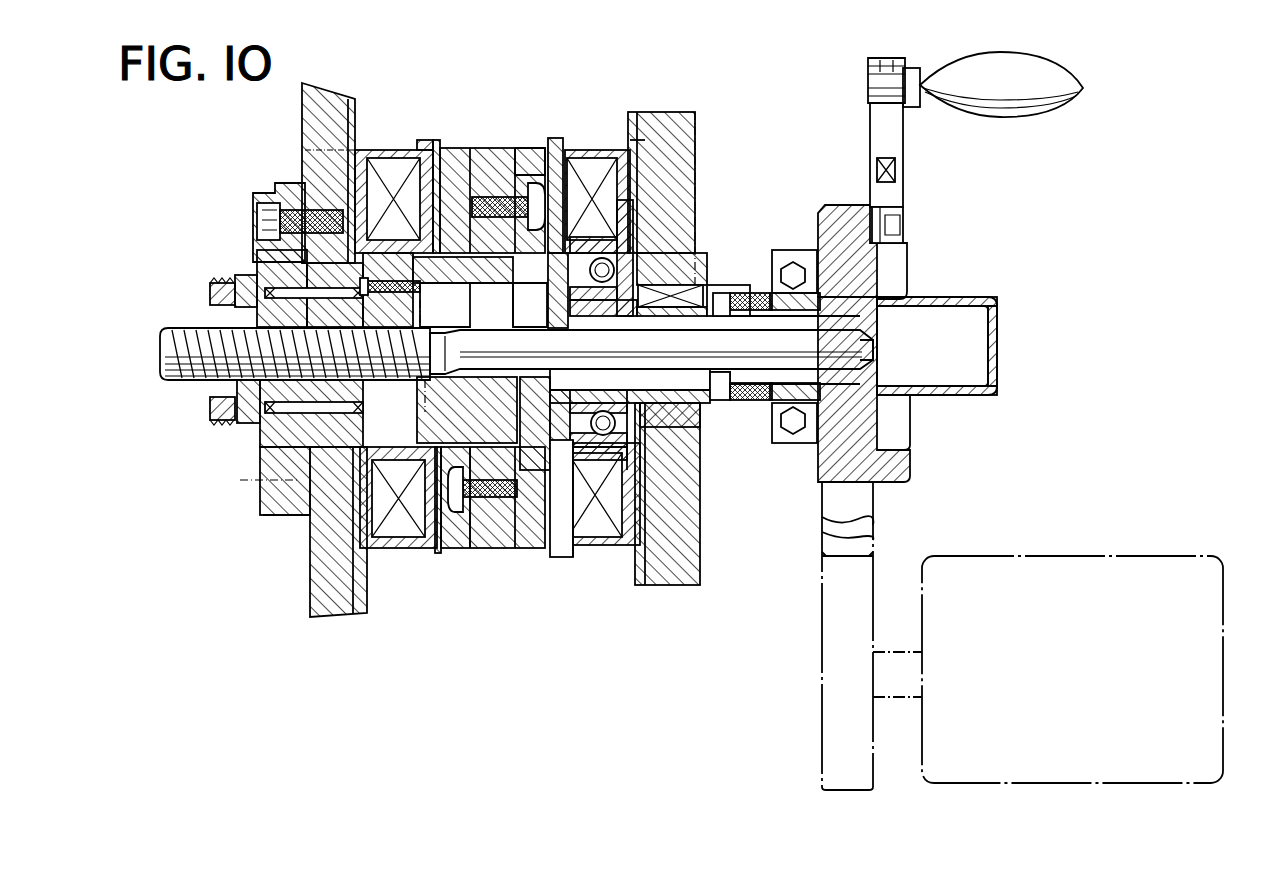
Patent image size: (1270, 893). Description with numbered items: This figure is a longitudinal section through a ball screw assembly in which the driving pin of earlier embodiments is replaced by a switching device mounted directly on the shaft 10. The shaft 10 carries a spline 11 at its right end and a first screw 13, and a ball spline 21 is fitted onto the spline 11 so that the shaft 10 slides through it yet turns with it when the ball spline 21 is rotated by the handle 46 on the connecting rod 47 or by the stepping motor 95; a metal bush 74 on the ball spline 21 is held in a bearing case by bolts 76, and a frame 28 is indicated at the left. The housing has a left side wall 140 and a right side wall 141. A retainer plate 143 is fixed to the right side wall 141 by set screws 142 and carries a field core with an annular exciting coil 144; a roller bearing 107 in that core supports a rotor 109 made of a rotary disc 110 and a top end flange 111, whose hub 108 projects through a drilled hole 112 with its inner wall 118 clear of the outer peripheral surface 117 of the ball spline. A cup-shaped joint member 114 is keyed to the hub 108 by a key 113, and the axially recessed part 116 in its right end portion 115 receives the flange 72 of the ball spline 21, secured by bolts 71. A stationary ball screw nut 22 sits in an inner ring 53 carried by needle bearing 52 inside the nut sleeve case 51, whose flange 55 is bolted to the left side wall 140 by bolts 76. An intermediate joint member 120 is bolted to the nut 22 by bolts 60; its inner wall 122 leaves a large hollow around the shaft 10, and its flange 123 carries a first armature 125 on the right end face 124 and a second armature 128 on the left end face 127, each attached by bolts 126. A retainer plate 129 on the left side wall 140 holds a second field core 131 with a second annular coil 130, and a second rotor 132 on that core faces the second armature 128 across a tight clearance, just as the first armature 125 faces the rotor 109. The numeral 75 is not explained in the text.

The shaft 10 is at (442, 326).
The spline 11 is at (878, 344).
The first screw 13 is at (178, 328).
The ball spline 21 is at (921, 380).
The ball screw nut 22 is at (212, 388).
The frame 28 is at (368, 282).
The handle 46 is at (1003, 92).
The connecting rod 47 is at (888, 132).
The nut sleeve case 51 is at (262, 452).
The needle bearing 52 is at (258, 268).
The inner ring 53 is at (252, 425).
The flange 55 is at (290, 188).
The bolts 60 is at (420, 270).
The bolts 71 is at (727, 318).
The flange 72 is at (745, 292).
The metal bush 74 is at (793, 430).
The nut 75 is at (775, 445).
The bolts 76 is at (268, 212).
The stepping motor 95 is at (1090, 556).
The roller bearing 107 is at (648, 255).
The hub 108 is at (741, 463).
The rotor 109 is at (555, 138).
The rotary disc 110 is at (548, 557).
The top end flange 111 is at (574, 557).
The drilled hole 112 is at (703, 270).
The key 113 is at (685, 287).
The joint member 114 is at (728, 286).
The right end portion 115 is at (755, 320).
The axially recessed part 116 is at (735, 405).
The outer peripheral surface 117 is at (547, 320).
The inner wall 118 is at (590, 268).
The intermediate joint member 120 is at (496, 303).
The inner wall 122 is at (490, 430).
The flange 123 is at (500, 160).
The right end face 124 is at (485, 340).
The first armature 125 is at (525, 160).
The bolts 126 is at (490, 197).
The left end face 127 is at (485, 548).
The second armature 128 is at (463, 548).
The retainer plate 129 is at (370, 150).
The second annular coil 130 is at (400, 178).
The second field core 131 is at (385, 150).
The second rotor 132 is at (437, 150).
The left side wall 140 is at (310, 572).
The right side wall 141 is at (698, 118).
The set screws 142 is at (348, 97).
The retainer plate 143 is at (600, 140).
The annular exciting coil 144 is at (585, 175).